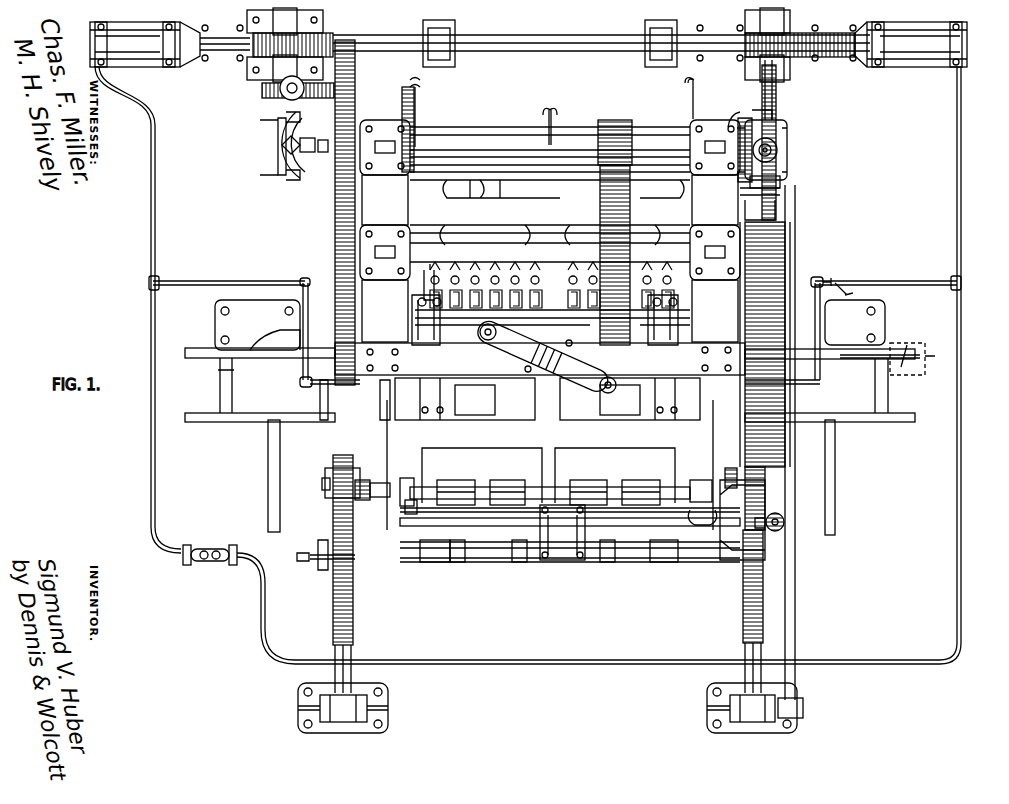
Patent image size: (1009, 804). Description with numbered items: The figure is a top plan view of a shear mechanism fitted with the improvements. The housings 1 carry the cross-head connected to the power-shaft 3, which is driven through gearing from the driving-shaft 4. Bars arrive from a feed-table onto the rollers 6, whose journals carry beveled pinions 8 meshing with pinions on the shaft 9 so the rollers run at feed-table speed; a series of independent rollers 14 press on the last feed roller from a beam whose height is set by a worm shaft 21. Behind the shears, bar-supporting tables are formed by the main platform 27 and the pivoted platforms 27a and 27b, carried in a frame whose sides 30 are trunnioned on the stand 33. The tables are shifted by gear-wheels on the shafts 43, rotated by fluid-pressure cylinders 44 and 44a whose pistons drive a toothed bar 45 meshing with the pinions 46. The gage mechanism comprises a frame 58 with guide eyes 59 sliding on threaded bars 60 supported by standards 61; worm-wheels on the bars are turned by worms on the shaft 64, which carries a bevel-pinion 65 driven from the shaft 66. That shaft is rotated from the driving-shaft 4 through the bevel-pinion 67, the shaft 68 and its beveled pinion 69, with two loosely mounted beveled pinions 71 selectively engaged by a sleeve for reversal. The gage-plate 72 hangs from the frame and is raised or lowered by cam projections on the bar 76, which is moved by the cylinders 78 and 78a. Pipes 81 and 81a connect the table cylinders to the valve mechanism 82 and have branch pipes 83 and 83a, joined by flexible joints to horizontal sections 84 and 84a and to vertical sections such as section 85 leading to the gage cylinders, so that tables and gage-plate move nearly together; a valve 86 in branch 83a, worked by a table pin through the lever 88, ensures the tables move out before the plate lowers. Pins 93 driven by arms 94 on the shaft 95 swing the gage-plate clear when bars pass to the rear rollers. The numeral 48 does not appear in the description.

The housings 1 is at (550, 231).
The power-shaft 3 is at (634, 378).
The driving-shaft 4 is at (496, 140).
The rollers 6 is at (503, 183).
The beveled pinions 8 is at (780, 205).
The shaft 9 is at (775, 83).
The independent rollers 14 is at (520, 336).
The shaft 21 is at (470, 240).
The main platform 27 is at (305, 383).
The platform 27a is at (552, 400).
The platform 27b is at (547, 399).
The sides of frame 30 is at (197, 360).
The stand 33 is at (281, 504).
The shafts 43 is at (334, 229).
The fluid-pressure cylinder 44 is at (150, 50).
The fluid-pressure cylinder 44a is at (924, 52).
The bar 45 is at (601, 48).
The pinions 46 is at (262, 50).
The pipe connection 48 is at (330, 390).
The frame 58 is at (570, 514).
The guide eyes or loops 59 is at (326, 470).
The threaded bars 60 is at (742, 598).
The standards 61 is at (340, 722).
The shaft 64 is at (480, 524).
The bevel-pinion 65 is at (786, 524).
The shaft 66 is at (797, 190).
The bevel-pinion 67 is at (745, 130).
The shaft 68 is at (776, 150).
The beveled pinion 69 is at (782, 168).
The beveled pinions 71 is at (785, 129).
The gage-plate 72 is at (490, 450).
The bar 76 is at (553, 488).
The fluid-pressure cylinder 78 is at (368, 482).
The fluid-pressure cylinder 78a is at (732, 468).
The pipe 81 is at (151, 337).
The pipe 81a is at (962, 450).
The valve mechanism 82 is at (216, 562).
The branch pipe 83 is at (224, 281).
The branch pipe 83a is at (898, 281).
The horizontal section 84 is at (388, 452).
The horizontal section 84a is at (712, 441).
The vertical section 85 is at (416, 510).
The valve 86 is at (834, 272).
The lever 88 is at (910, 376).
The pins 93 is at (580, 545).
The arms 94 is at (442, 562).
The shaft 95 is at (496, 560).